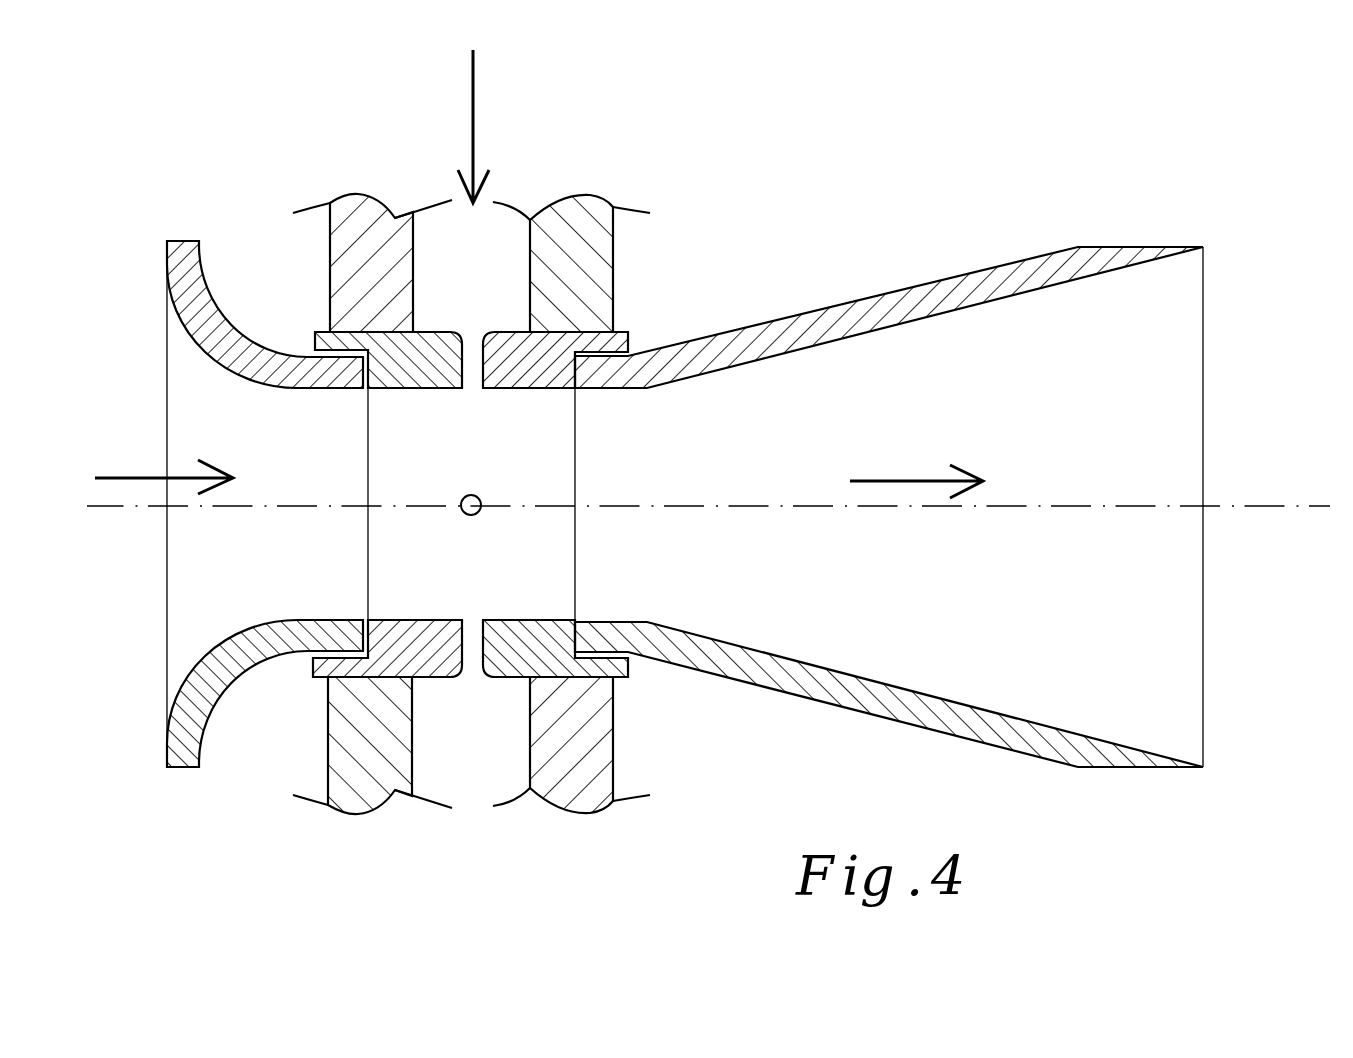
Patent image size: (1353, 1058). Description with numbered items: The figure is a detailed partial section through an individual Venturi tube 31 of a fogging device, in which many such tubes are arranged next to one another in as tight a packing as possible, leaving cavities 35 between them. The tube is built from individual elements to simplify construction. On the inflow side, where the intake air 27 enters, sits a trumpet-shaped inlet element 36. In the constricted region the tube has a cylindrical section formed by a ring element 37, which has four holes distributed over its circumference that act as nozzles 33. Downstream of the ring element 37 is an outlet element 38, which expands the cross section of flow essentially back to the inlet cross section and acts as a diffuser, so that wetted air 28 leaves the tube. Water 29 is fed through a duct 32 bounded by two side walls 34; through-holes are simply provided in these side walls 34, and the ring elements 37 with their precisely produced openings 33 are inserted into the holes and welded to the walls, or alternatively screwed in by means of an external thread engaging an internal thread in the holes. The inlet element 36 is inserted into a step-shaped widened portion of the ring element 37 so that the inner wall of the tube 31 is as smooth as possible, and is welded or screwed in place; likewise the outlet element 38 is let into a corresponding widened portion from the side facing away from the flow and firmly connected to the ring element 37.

The intake air upstream of the atomizing grid 27 is at (147, 475).
The wetted air downstream of the atomizing grid 28 is at (913, 482).
The fed water 29 is at (474, 120).
The Venturi tube 31 is at (1109, 418).
The duct for fed water 32 is at (475, 781).
The nozzles 33 is at (468, 617).
The side walls of the duct 34 is at (342, 277).
The cavities between Venturi tubes 35 is at (889, 507).
The inlet element 36 is at (190, 723).
The ring element 37 is at (617, 345).
The outlet element 38 is at (933, 302).